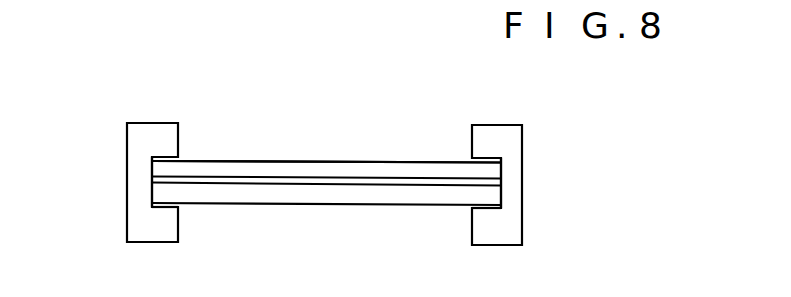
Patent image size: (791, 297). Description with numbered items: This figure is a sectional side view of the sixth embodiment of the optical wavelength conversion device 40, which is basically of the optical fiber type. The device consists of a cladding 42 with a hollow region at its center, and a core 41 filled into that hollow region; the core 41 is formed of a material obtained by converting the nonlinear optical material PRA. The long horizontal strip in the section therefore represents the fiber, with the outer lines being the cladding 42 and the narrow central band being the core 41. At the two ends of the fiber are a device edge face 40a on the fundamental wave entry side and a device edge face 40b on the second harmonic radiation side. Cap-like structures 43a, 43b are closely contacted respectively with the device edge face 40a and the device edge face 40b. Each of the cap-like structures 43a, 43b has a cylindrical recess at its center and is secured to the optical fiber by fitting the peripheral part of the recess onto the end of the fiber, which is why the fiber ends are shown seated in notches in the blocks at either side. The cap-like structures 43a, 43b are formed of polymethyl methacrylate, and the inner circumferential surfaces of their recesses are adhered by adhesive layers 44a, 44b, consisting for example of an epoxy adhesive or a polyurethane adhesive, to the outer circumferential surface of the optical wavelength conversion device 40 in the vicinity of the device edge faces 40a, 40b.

The optical wavelength conversion device 40 is at (362, 96).
The device edge face on the fundamental wave entry side 40a is at (152, 178).
The device edge face on the second harmonic radiation side 40b is at (505, 188).
The core 41 is at (323, 182).
The cladding 42 is at (270, 166).
The cap-like structure 43a is at (145, 123).
The cap-like structure 43b is at (500, 137).
The adhesive layer 44a is at (156, 211).
The adhesive layer 44b is at (489, 210).